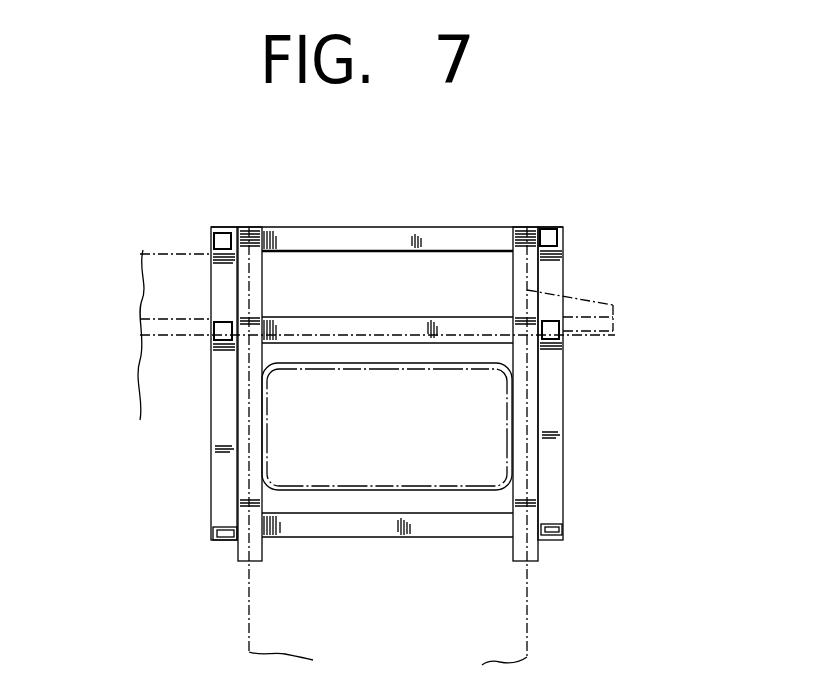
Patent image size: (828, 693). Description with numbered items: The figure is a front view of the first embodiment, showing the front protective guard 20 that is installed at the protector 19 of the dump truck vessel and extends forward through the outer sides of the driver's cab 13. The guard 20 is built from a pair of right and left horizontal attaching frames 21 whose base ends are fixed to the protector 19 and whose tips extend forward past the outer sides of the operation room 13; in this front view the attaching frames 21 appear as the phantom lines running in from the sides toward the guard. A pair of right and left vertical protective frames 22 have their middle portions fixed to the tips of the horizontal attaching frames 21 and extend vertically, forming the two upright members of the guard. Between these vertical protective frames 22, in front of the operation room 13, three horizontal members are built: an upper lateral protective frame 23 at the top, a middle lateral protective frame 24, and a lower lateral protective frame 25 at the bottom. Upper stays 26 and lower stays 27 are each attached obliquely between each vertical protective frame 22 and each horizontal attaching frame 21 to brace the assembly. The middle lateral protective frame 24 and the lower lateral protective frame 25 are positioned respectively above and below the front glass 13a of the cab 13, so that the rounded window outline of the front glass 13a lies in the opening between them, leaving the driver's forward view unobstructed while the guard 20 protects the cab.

The driver's cab 13 is at (503, 600).
The front glass 13a is at (500, 430).
The protector 19 is at (152, 265).
The front protective guard 20 is at (462, 207).
The horizontal attaching frame 21 is at (218, 343).
The vertical protective frame 22 is at (250, 289).
The upper lateral protective frame 23 is at (372, 228).
The middle lateral protective frame 24 is at (380, 322).
The lower lateral protective frame 25 is at (312, 527).
The upper stay 26 is at (208, 257).
The lower stay 27 is at (225, 470).